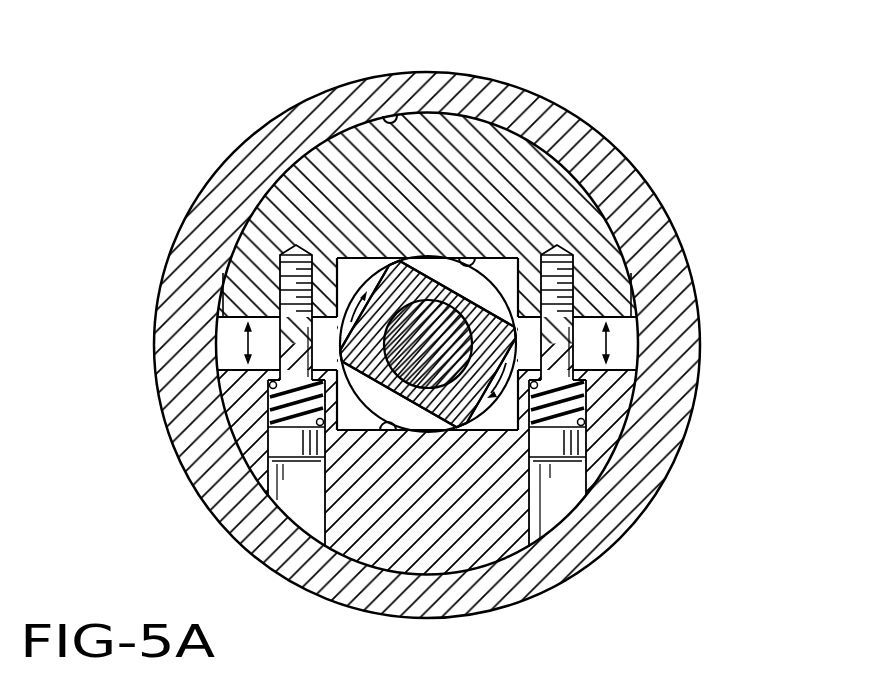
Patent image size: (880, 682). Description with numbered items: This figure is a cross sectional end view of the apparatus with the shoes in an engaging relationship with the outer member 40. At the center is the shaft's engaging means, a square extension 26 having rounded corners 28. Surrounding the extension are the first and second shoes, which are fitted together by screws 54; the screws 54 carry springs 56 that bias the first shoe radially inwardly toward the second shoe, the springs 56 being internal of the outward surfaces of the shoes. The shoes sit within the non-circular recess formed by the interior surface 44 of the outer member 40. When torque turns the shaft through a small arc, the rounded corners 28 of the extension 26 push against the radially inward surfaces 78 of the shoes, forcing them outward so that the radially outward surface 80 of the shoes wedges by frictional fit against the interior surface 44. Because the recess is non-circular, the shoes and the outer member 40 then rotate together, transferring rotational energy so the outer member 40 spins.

The square extension 26 is at (402, 285).
The rounded corners 28 is at (458, 425).
The outer member 40 is at (635, 482).
The interior surface 44 is at (386, 118).
The screws 54 is at (560, 293).
The springs 56 is at (585, 403).
The radially inward surfaces 78 is at (475, 270).
The radially outward surface 80 is at (333, 137).